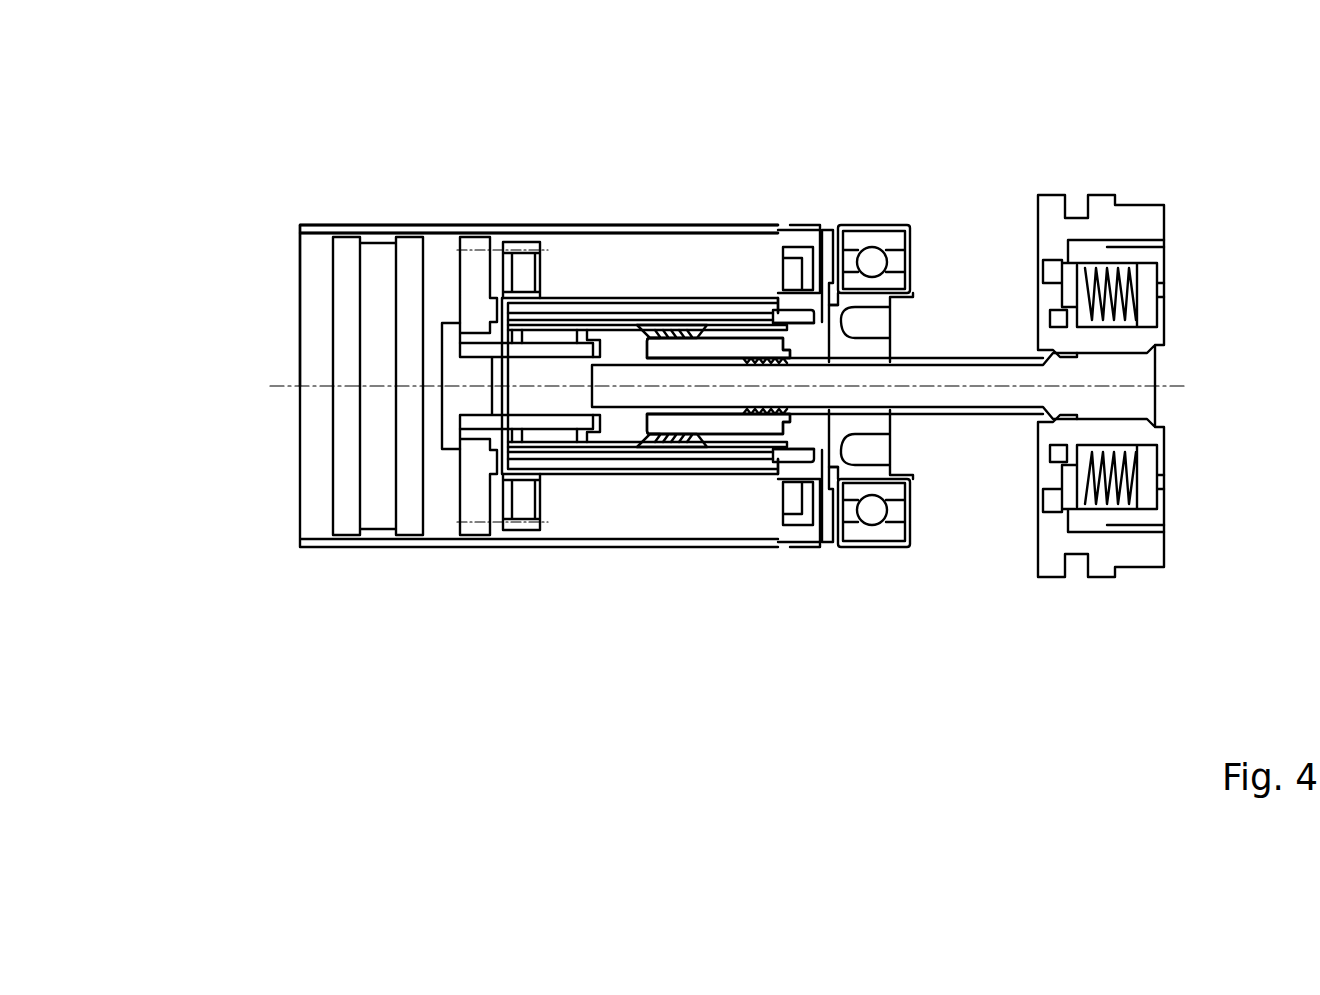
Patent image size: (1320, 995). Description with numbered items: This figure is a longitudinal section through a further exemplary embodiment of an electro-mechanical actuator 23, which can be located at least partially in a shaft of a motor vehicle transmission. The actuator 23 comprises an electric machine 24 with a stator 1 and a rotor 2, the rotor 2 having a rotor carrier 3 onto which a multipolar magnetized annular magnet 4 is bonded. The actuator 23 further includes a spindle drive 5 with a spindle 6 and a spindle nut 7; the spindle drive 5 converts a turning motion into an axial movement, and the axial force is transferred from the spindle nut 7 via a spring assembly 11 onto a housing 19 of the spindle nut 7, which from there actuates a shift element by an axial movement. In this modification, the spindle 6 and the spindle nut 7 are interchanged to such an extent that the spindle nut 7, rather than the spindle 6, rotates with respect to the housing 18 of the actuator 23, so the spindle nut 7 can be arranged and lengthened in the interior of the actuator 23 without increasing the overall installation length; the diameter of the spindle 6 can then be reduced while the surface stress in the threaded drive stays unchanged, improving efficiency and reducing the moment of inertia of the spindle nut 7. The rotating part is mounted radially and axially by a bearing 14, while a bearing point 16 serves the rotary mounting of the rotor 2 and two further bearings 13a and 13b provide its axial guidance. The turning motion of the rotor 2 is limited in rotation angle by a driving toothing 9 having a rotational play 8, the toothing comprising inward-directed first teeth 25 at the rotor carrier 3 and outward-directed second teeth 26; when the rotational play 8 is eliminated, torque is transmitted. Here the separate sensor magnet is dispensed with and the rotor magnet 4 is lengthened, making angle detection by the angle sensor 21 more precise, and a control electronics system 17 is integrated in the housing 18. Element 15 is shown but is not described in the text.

The stator 1 is at (602, 263).
The rotor 2 is at (797, 307).
The rotor carrier 3 is at (723, 320).
The annular magnet 4 is at (577, 310).
The spindle drive 5 is at (897, 347).
The spindle 6 is at (1008, 395).
The spindle nut 7 is at (823, 343).
The rotational play 8 is at (670, 438).
The driving toothing 9 is at (718, 386).
The spring assembly 11 is at (1112, 452).
The bearing 13a is at (593, 427).
The bearing 13b is at (792, 448).
The bearing 14 is at (888, 530).
The bracket 15 is at (567, 447).
The bearing point 16 is at (813, 448).
The control electronics system 17 is at (373, 342).
The housing 18 is at (492, 548).
The housing of the spindle nut 19 is at (1138, 548).
The angle sensor 21 is at (492, 310).
The electro-mechanical actuator 23 is at (283, 165).
The electric machine 24 is at (527, 224).
The first teeth 25 is at (647, 327).
The second teeth 26 is at (676, 330).